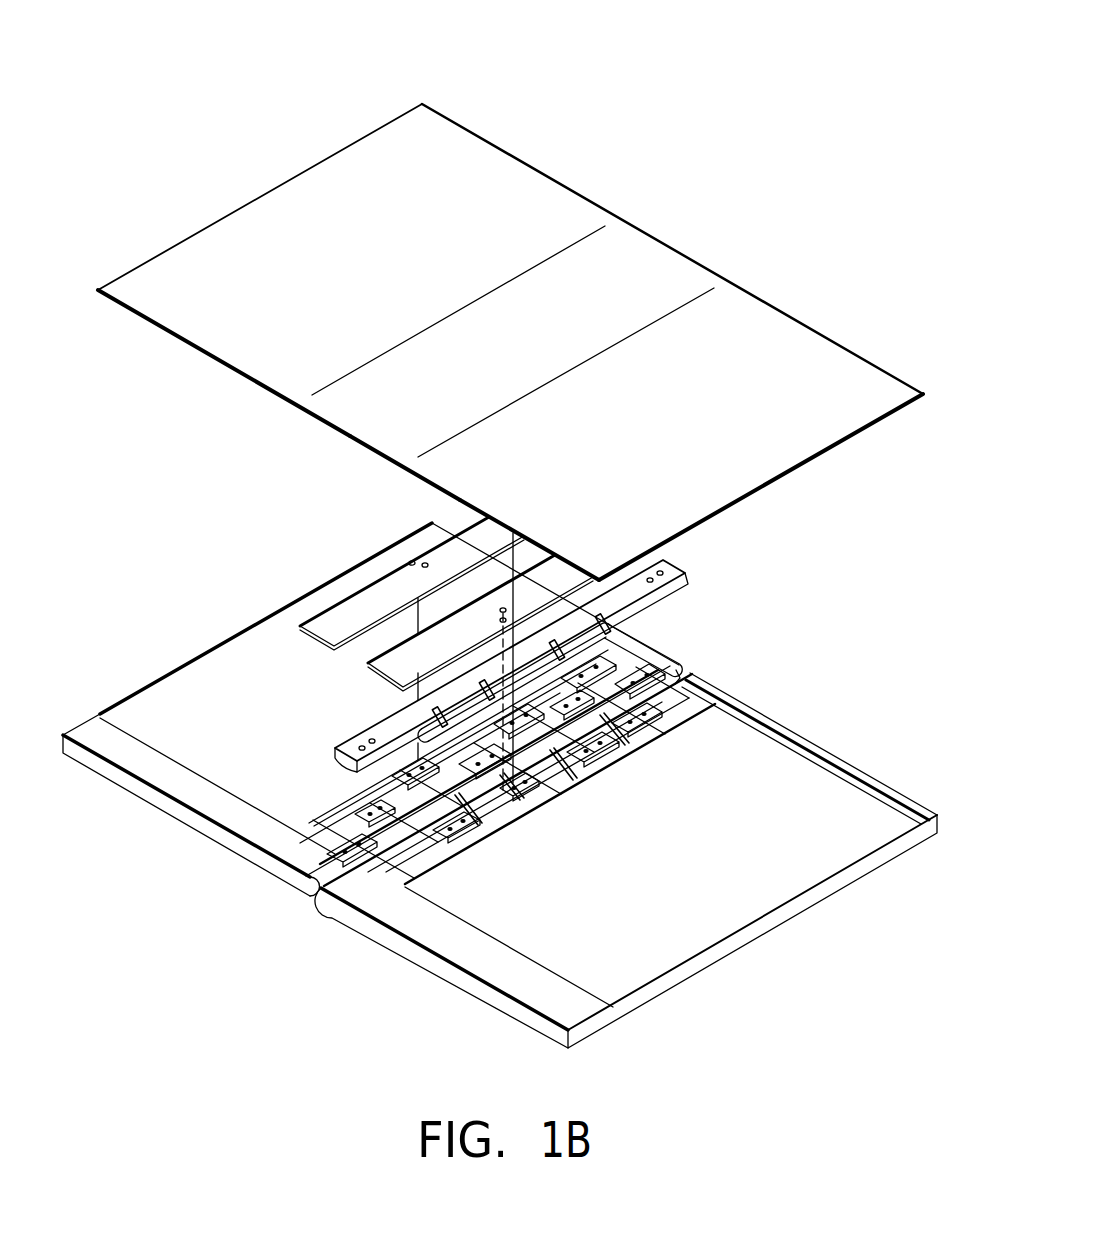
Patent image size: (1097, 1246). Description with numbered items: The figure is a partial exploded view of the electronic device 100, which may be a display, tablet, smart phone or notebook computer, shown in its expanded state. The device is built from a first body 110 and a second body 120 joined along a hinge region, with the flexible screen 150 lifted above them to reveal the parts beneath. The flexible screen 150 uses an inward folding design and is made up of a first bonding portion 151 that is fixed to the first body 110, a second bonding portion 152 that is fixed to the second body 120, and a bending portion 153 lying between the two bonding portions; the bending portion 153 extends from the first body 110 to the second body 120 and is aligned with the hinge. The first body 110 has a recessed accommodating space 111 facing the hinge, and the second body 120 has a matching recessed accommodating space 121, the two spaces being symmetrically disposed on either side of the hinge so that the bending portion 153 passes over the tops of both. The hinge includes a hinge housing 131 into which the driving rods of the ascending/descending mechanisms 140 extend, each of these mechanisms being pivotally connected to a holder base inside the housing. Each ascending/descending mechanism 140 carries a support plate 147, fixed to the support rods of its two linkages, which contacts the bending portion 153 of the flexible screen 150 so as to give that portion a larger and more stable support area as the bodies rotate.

The electronic device 100 is at (857, 1060).
The first body 110 is at (601, 860).
The accommodating space 111 is at (399, 886).
The second body 120 is at (180, 813).
The accommodating space 121 is at (327, 838).
The hinge housing 131 is at (687, 583).
The ascending/descending mechanism 140 is at (550, 715).
The support plate 147 is at (398, 667).
The flexible screen 150 is at (510, 290).
The first bonding portion 151 is at (777, 355).
The second bonding portion 152 is at (478, 180).
The bending portion 153 is at (643, 270).